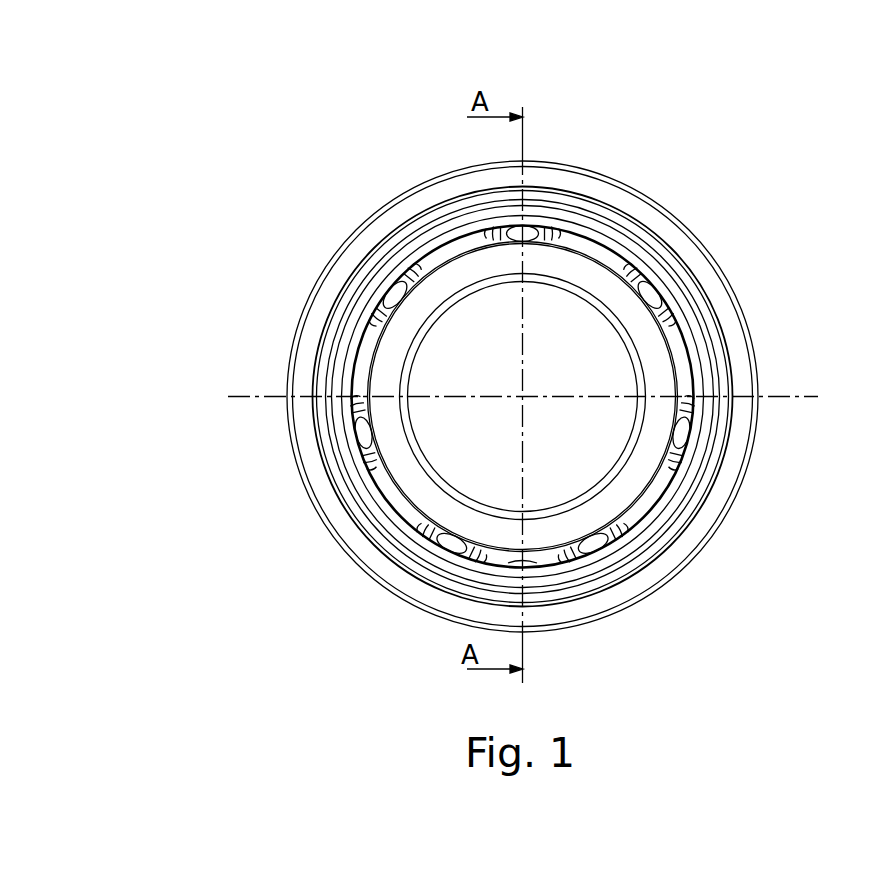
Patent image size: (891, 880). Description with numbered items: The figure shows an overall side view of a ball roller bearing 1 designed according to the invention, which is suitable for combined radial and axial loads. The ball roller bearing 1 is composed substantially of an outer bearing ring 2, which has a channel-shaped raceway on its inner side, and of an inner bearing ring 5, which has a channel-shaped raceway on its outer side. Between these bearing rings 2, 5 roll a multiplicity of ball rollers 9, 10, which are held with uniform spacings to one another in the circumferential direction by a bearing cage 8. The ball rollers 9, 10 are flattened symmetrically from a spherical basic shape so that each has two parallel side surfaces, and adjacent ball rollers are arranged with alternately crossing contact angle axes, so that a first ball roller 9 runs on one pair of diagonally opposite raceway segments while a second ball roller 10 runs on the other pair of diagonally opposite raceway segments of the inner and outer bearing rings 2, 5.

The ball roller bearing 1 is at (673, 595).
The outer bearing ring 2 is at (718, 292).
The inner bearing ring 5 is at (417, 313).
The bearing cage 8 is at (347, 355).
The first ball roller 9 is at (450, 255).
The second ball roller 10 is at (542, 228).